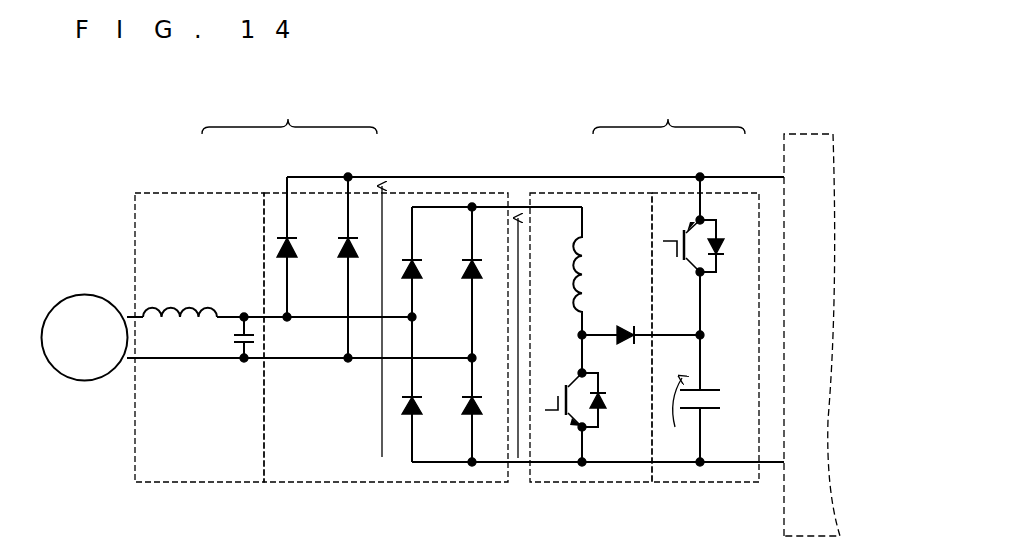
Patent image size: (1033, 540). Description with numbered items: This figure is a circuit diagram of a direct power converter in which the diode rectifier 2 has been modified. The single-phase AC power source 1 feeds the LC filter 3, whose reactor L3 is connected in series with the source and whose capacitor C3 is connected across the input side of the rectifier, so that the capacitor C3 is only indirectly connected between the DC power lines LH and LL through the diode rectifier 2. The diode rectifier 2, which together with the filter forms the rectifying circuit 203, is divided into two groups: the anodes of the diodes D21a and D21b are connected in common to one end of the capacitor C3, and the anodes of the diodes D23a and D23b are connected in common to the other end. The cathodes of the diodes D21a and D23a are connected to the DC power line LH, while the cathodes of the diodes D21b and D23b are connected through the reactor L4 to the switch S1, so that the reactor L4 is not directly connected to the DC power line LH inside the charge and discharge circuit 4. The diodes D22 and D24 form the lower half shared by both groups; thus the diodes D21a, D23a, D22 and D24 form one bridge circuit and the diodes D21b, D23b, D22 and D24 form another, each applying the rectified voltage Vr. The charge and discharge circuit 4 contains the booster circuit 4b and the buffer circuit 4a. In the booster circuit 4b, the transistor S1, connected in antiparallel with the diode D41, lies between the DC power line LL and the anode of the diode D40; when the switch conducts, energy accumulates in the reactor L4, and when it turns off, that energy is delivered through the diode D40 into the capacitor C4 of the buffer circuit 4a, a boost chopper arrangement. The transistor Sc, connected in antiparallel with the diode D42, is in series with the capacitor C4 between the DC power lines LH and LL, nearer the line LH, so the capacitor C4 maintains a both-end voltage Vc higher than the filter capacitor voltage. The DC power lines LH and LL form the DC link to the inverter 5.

The single-phase AC power source 1 is at (92, 296).
The diode rectifier 2 is at (366, 192).
The LC filter 3 is at (209, 192).
The rectifying circuit 203 is at (289, 112).
The charge and discharge circuit 4 is at (669, 112).
The buffer circuit 4a is at (721, 192).
The booster circuit 4b is at (605, 192).
The inverter 5 is at (796, 133).
The reactor L3 is at (207, 306).
The capacitor C3 is at (237, 341).
The diode D21a is at (297, 250).
The diode D23a is at (341, 258).
The diode D21b is at (423, 270).
The diode D23b is at (465, 280).
The diode D22 is at (419, 411).
The diode D24 is at (463, 408).
The reactor L4 is at (571, 268).
The transistor S1 is at (564, 400).
The diode D41 is at (607, 403).
The diode D40 is at (625, 326).
The transistor Sc is at (683, 254).
The diode D42 is at (723, 249).
The capacitor C4 is at (712, 388).
The voltage Vr is at (435, 322).
The both-end voltage Vc is at (675, 415).
The DC power line LH is at (509, 176).
The DC power line LL is at (727, 464).